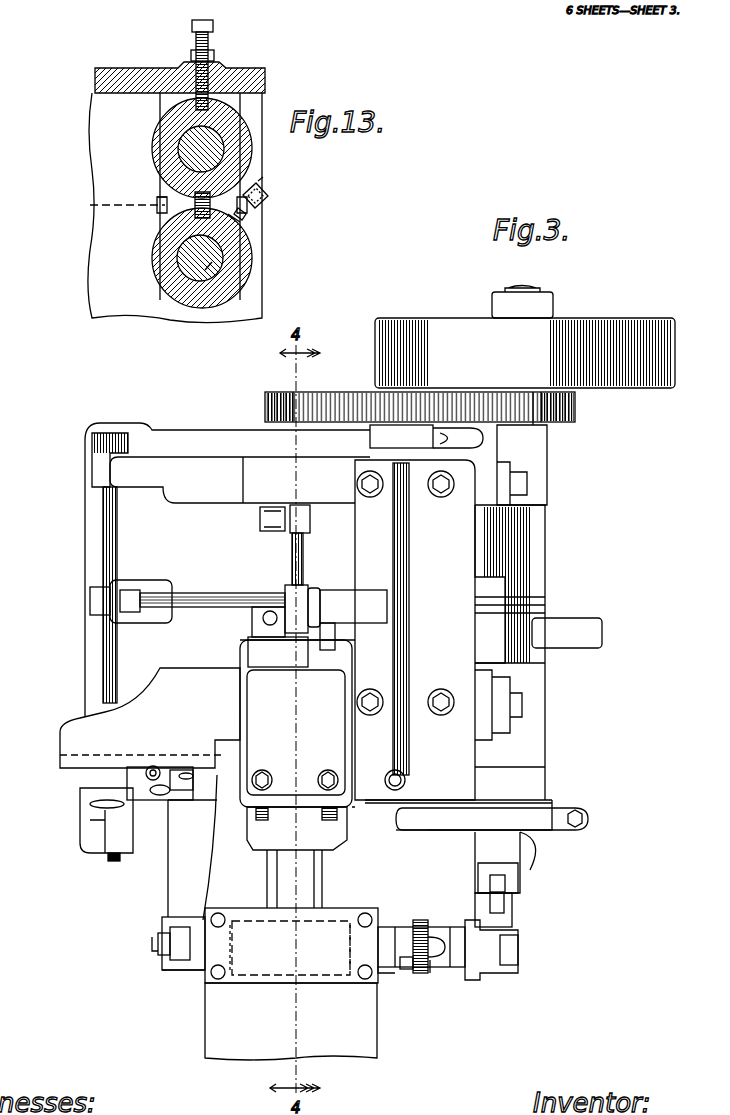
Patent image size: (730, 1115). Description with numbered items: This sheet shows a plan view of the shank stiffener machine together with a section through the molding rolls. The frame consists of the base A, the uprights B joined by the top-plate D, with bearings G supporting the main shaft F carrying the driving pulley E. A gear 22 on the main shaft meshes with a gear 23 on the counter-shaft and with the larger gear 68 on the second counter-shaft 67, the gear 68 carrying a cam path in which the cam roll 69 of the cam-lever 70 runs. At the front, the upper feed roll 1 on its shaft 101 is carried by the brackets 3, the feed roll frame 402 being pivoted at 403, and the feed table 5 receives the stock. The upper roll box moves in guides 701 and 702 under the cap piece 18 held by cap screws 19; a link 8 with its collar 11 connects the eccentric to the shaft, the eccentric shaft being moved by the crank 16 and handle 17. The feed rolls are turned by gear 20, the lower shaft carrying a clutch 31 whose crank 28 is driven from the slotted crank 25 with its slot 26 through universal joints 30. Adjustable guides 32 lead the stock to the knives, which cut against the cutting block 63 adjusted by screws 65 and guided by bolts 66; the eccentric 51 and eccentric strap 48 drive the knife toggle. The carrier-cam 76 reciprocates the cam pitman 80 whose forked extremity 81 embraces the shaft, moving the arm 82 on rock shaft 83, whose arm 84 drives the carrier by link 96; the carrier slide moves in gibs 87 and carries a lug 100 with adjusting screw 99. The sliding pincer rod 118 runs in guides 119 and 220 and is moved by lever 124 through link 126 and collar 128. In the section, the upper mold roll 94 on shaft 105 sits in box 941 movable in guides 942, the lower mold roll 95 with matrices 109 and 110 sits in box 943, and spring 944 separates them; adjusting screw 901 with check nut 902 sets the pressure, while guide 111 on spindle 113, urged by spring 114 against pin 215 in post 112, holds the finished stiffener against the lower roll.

In FIG. 13, the upright B is at (86, 238).
In FIG. 3, the upright B is at (228, 478).
In FIG. 13, the top-plate D is at (233, 69).
In FIG. 3, the top-plate D is at (457, 558).
In FIG. 13, the adjusting screw 901 is at (194, 43).
In FIG. 3, the adjusting screw 901 is at (412, 778).
In FIG. 13, the check nut 902 is at (191, 57).
In FIG. 13, the upper mold roll 94 is at (249, 158).
In FIG. 3, the upper mold roll 94 is at (476, 797).
In FIG. 13, the upper mold roll shaft 105 is at (212, 150).
In FIG. 3, the upper mold roll shaft 105 is at (476, 832).
In FIG. 13, the box 941 is at (166, 118).
In FIG. 13, the guides 942 is at (157, 200).
In FIG. 13, the spring 944 is at (103, 204).
In FIG. 13, the matrix 109 is at (250, 266).
In FIG. 13, the matrix 110 is at (151, 258).
In FIG. 13, the lower mold roll 95 is at (186, 296).
In FIG. 13, the second counter-shaft 67 is at (206, 272).
In FIG. 13, the box 943 is at (172, 296).
In FIG. 13, the post 112 is at (265, 203).
In FIG. 13, the spindle 113 is at (263, 190).
In FIG. 13, the pin 215 is at (267, 193).
In FIG. 13, the spring 114 is at (247, 216).
In FIG. 13, the guide 111 is at (248, 230).
In FIG. 3, the driving pulley E is at (678, 347).
In FIG. 3, the main shaft F is at (526, 284).
In FIG. 3, the gear 68 is at (287, 403).
In FIG. 3, the cam roll 69 is at (457, 420).
In FIG. 3, the gear 23 is at (573, 409).
In FIG. 3, the gear 22 is at (552, 423).
In FIG. 3, the cam-lever 70 is at (480, 438).
In FIG. 3, the bearings G is at (531, 457).
In FIG. 3, the base A is at (90, 553).
In FIG. 3, the rock shaft 83 is at (112, 670).
In FIG. 3, the arm 82 is at (102, 602).
In FIG. 3, the cam pitman 80 is at (198, 597).
In FIG. 3, the guide 220 is at (298, 522).
In FIG. 3, the sliding pincer rod 118 is at (303, 551).
In FIG. 3, the collar 128 is at (297, 597).
In FIG. 3, the link 126 is at (315, 588).
In FIG. 3, the guide 119 is at (283, 617).
In FIG. 3, the lever 124 is at (333, 624).
In FIG. 3, the forked extremity 81 is at (546, 603).
In FIG. 3, the carrier-cam 76 is at (603, 621).
In FIG. 3, the eccentric strap 48 is at (523, 820).
In FIG. 3, the eccentric 51 is at (551, 832).
In FIG. 3, the slotted crank 25 is at (502, 876).
In FIG. 3, the slot 26 is at (504, 885).
In FIG. 3, the universal joint 30 is at (501, 911).
In FIG. 3, the clutch 31 is at (474, 969).
In FIG. 3, the crank 28 is at (509, 933).
In FIG. 3, the collar 11 is at (384, 947).
In FIG. 3, the crank 16 is at (428, 928).
In FIG. 3, the handle 17 is at (440, 958).
In FIG. 3, the gear 20 is at (432, 974).
In FIG. 3, the link 8 is at (398, 968).
In FIG. 3, the guide 702 is at (380, 973).
In FIG. 3, the feed table 5 is at (378, 1027).
In FIG. 3, the adjusting screw 65 is at (258, 774).
In FIG. 3, the bolt 66 is at (258, 808).
In FIG. 3, the cutting block 63 is at (297, 803).
In FIG. 3, the adjustable guides 32 is at (269, 884).
In FIG. 3, the cap piece 18 is at (258, 909).
In FIG. 3, the cap screws 19 is at (218, 913).
In FIG. 3, the upper feed roll 1 is at (280, 961).
In FIG. 3, the guide 701 is at (203, 913).
In FIG. 3, the feed roll shaft 101 is at (170, 940).
In FIG. 3, the pivot 403 is at (157, 946).
In FIG. 3, the feed roll frame 402 is at (207, 977).
In FIG. 3, the bracket 3 is at (186, 817).
In FIG. 3, the lug 100 is at (150, 783).
In FIG. 3, the adjusting screw 99 is at (147, 772).
In FIG. 3, the gibs 87 is at (77, 767).
In FIG. 3, the arm 84 is at (130, 804).
In FIG. 3, the link 96 is at (117, 861).